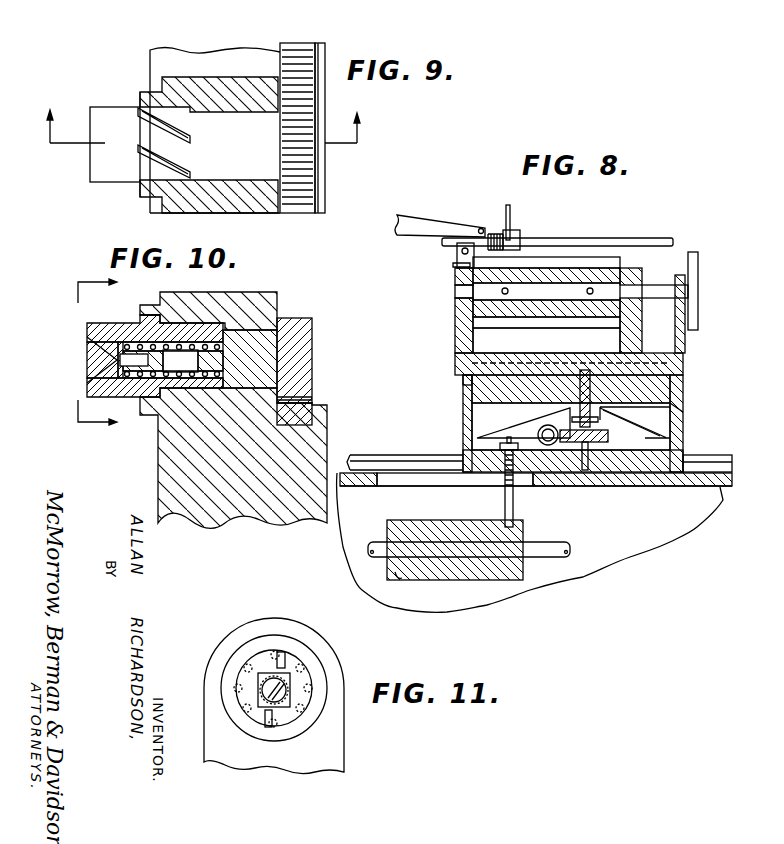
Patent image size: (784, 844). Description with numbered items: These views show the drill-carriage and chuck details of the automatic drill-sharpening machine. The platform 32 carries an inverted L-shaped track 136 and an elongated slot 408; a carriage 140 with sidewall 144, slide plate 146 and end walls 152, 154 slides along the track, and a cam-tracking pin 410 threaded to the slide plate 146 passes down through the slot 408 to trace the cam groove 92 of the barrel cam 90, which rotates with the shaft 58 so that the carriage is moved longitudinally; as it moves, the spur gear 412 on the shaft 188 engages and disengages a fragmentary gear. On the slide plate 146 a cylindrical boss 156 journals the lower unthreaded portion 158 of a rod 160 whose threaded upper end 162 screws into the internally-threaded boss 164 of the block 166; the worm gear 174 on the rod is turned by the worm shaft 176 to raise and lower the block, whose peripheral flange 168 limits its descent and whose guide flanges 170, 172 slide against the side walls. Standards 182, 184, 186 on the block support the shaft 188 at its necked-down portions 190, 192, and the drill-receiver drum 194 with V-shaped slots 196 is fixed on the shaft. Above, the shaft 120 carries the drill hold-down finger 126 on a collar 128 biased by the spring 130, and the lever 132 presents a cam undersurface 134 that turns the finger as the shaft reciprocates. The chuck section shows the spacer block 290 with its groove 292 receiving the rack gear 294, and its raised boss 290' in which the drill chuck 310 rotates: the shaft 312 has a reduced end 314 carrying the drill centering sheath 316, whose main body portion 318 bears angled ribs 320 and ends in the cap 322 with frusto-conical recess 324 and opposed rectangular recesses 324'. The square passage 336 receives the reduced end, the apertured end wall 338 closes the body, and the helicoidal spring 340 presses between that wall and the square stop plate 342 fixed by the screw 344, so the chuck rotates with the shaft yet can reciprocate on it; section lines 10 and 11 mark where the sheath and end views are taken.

In FIG. 9, the section line 10— 10 is at (213, 126).
In FIG. 10, the section line 11— 11 is at (97, 359).
In FIG. 8, the platform 32 is at (723, 493).
In FIG. 8, the shaft 58 is at (572, 547).
In FIG. 8, the barrel cam 90 is at (500, 580).
In FIG. 8, the cam groove 92 is at (397, 576).
In FIG. 8, the shaft 120 is at (558, 238).
In FIG. 8, the drill hold-down finger 126 is at (508, 228).
In FIG. 8, the collar 128 is at (520, 229).
In FIG. 8, the spring 130 is at (505, 222).
In FIG. 8, the lever 132 is at (440, 217).
In FIG. 8, the cam undersurface 134 is at (485, 228).
In FIG. 8, the track 136 is at (395, 442).
In FIG. 8, the carriage 140 is at (464, 428).
In FIG. 8, the sidewall 144 is at (683, 442).
In FIG. 8, the slide plate 146 is at (652, 488).
In FIG. 8, the end wall 152 is at (463, 402).
In FIG. 8, the end wall 154 is at (683, 407).
In FIG. 8, the cylindrical boss 156 is at (603, 475).
In FIG. 8, the lower unthreaded portion 158 is at (585, 468).
In FIG. 8, the rod 160 is at (592, 395).
In FIG. 8, the threaded upper end 162 is at (578, 393).
In FIG. 8, the internally-threaded boss 164 is at (606, 414).
In FIG. 8, the block 166 is at (465, 385).
In FIG. 8, the peripheral flange 168 is at (455, 358).
In FIG. 8, the guide flange 170 is at (523, 423).
In FIG. 8, the guide flange 172 is at (683, 422).
In FIG. 8, the worm gear 174 is at (677, 412).
In FIG. 8, the worm shaft 176 is at (544, 428).
In FIG. 8, the standard 182 is at (457, 334).
In FIG. 8, the standard 184 is at (642, 341).
In FIG. 8, the standard 186 is at (686, 343).
In FIG. 8, the shaft 188 is at (555, 290).
In FIG. 8, the necked-down portion 190 is at (455, 293).
In FIG. 8, the necked-down portion 192 is at (637, 285).
In FIG. 8, the drill-receiver drum 194 is at (633, 287).
In FIG. 8, the V-shaped slot 196 is at (620, 257).
In FIG. 10, the spacer block 290 is at (226, 458).
In FIG. 9, the raised boss 290' is at (210, 146).
In FIG. 10, the raised boss 290' is at (226, 299).
In FIG. 11, the raised boss 290' is at (274, 681).
In FIG. 9, the groove 292 is at (310, 208).
In FIG. 10, the groove 292 is at (312, 398).
In FIG. 9, the rack gear 294 is at (325, 52).
In FIG. 10, the rack gear 294 is at (295, 420).
In FIG. 9, the drill chuck 310 is at (106, 183).
In FIG. 10, the shaft 312 is at (247, 392).
In FIG. 10, the reduced end 314 is at (187, 363).
In FIG. 9, the drill centering sheath 316 is at (118, 104).
In FIG. 10, the drill centering sheath 316 is at (127, 313).
In FIG. 10, the main body portion 318 is at (198, 328).
In FIG. 9, the rib 320 is at (191, 138).
In FIG. 10, the rib 320 is at (183, 318).
In FIG. 9, the cap 322 is at (89, 180).
In FIG. 10, the cap 322 is at (118, 397).
In FIG. 10, the frusto-conical recess 324 is at (82, 350).
In FIG. 11, the frusto-conical recess 324 is at (307, 680).
In FIG. 10, the recess 324' is at (76, 360).
In FIG. 11, the recess 324' is at (289, 699).
In FIG. 10, the square passage 336 is at (145, 343).
In FIG. 10, the end wall 338 is at (223, 351).
In FIG. 10, the helicoidal spring 340 is at (170, 392).
In FIG. 10, the stop plate 342 is at (113, 375).
In FIG. 9, the screw 344 is at (312, 127).
In FIG. 10, the screw 344 is at (310, 318).
In FIG. 8, the slot 408 is at (380, 487).
In FIG. 8, the cam-tracking pin 410 is at (503, 495).
In FIG. 8, the spur gear 412 is at (700, 258).